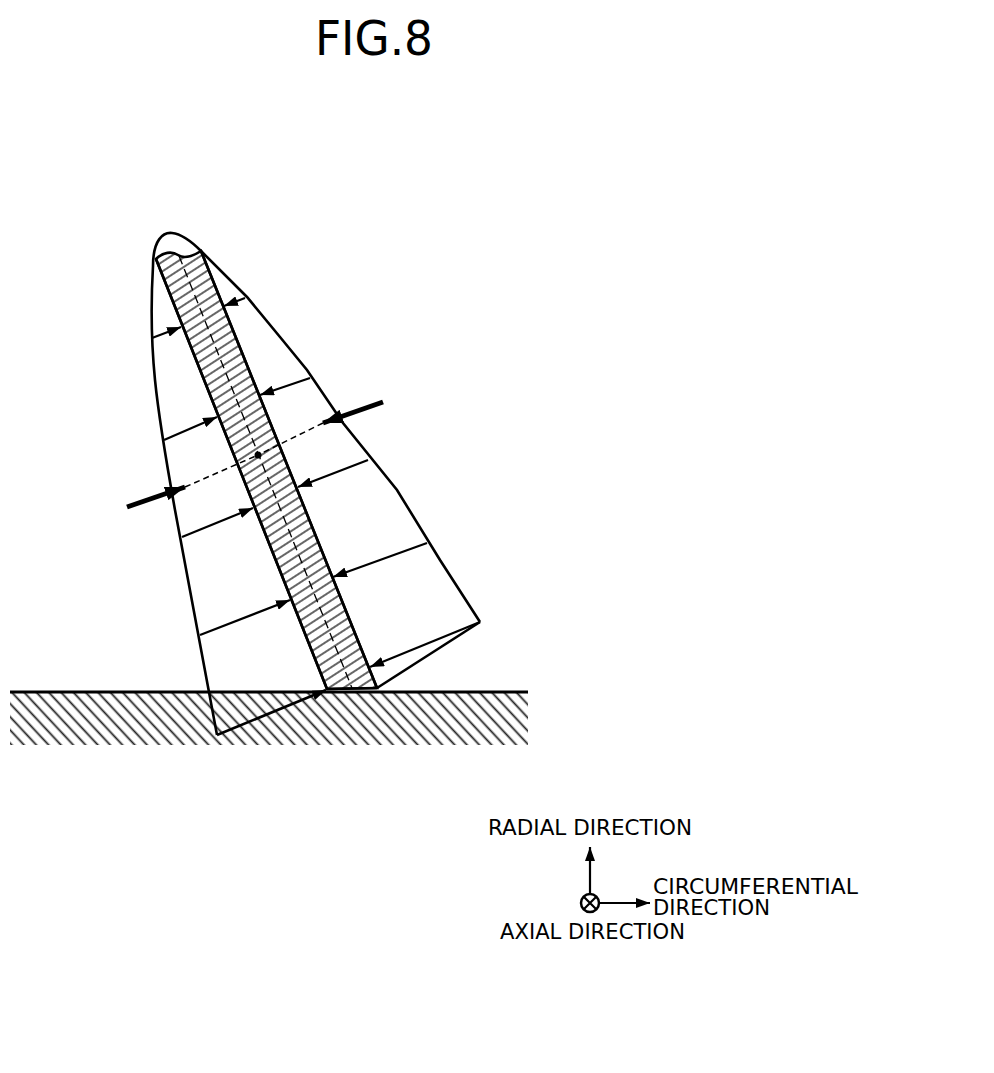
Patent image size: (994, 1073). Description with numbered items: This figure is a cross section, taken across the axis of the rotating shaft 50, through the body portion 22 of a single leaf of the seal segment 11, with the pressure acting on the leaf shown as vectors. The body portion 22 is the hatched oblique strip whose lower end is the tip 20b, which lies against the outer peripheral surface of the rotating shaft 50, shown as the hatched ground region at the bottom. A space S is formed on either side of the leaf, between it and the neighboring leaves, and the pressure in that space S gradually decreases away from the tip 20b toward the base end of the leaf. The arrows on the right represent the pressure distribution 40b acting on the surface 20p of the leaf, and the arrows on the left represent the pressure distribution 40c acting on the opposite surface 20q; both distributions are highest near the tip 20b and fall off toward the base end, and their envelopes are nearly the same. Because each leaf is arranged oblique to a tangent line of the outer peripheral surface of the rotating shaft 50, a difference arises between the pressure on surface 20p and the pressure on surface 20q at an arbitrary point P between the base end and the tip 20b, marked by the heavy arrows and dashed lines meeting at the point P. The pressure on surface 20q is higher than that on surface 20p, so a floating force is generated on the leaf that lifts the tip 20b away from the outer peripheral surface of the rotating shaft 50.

The seal segment 11 is at (309, 489).
The body portion 22 is at (247, 358).
The pressure distribution 40c is at (155, 386).
The pressure distribution 40b is at (398, 489).
The arbitrary point P is at (254, 455).
The surface 20p is at (348, 614).
The surface 20q is at (310, 647).
The rotating shaft 50 is at (496, 692).
The tip 20b is at (366, 691).
The space S is at (272, 271).